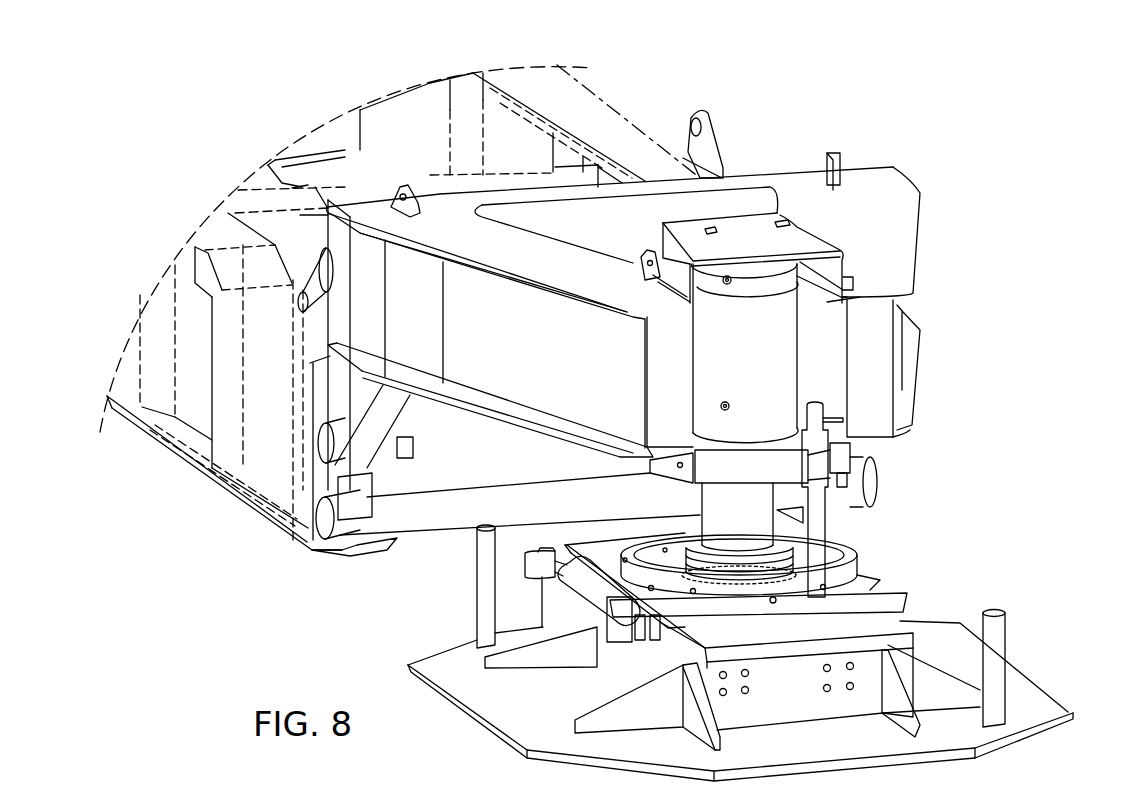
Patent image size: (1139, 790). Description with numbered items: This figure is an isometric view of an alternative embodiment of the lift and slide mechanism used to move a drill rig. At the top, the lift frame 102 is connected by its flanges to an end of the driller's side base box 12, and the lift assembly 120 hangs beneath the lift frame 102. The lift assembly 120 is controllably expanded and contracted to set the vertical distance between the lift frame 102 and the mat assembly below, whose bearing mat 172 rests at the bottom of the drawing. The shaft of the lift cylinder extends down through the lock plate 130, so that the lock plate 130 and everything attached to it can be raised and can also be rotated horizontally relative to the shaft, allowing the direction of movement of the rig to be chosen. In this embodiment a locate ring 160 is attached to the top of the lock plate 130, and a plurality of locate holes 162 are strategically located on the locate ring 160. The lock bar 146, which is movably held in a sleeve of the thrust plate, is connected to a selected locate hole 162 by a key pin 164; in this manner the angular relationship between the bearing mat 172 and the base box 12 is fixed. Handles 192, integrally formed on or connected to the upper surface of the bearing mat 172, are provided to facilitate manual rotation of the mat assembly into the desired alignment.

The driller's side base box 12 is at (148, 447).
The lift frame 102 is at (898, 180).
The lift assembly 120 is at (392, 620).
The lock plate 130 is at (903, 596).
The lock bar 146 is at (818, 530).
The locate ring 160 is at (853, 558).
The locate holes 162 is at (652, 590).
The key pin 164 is at (870, 585).
The bearing mat 172 is at (1042, 688).
The handles 192 is at (473, 582).